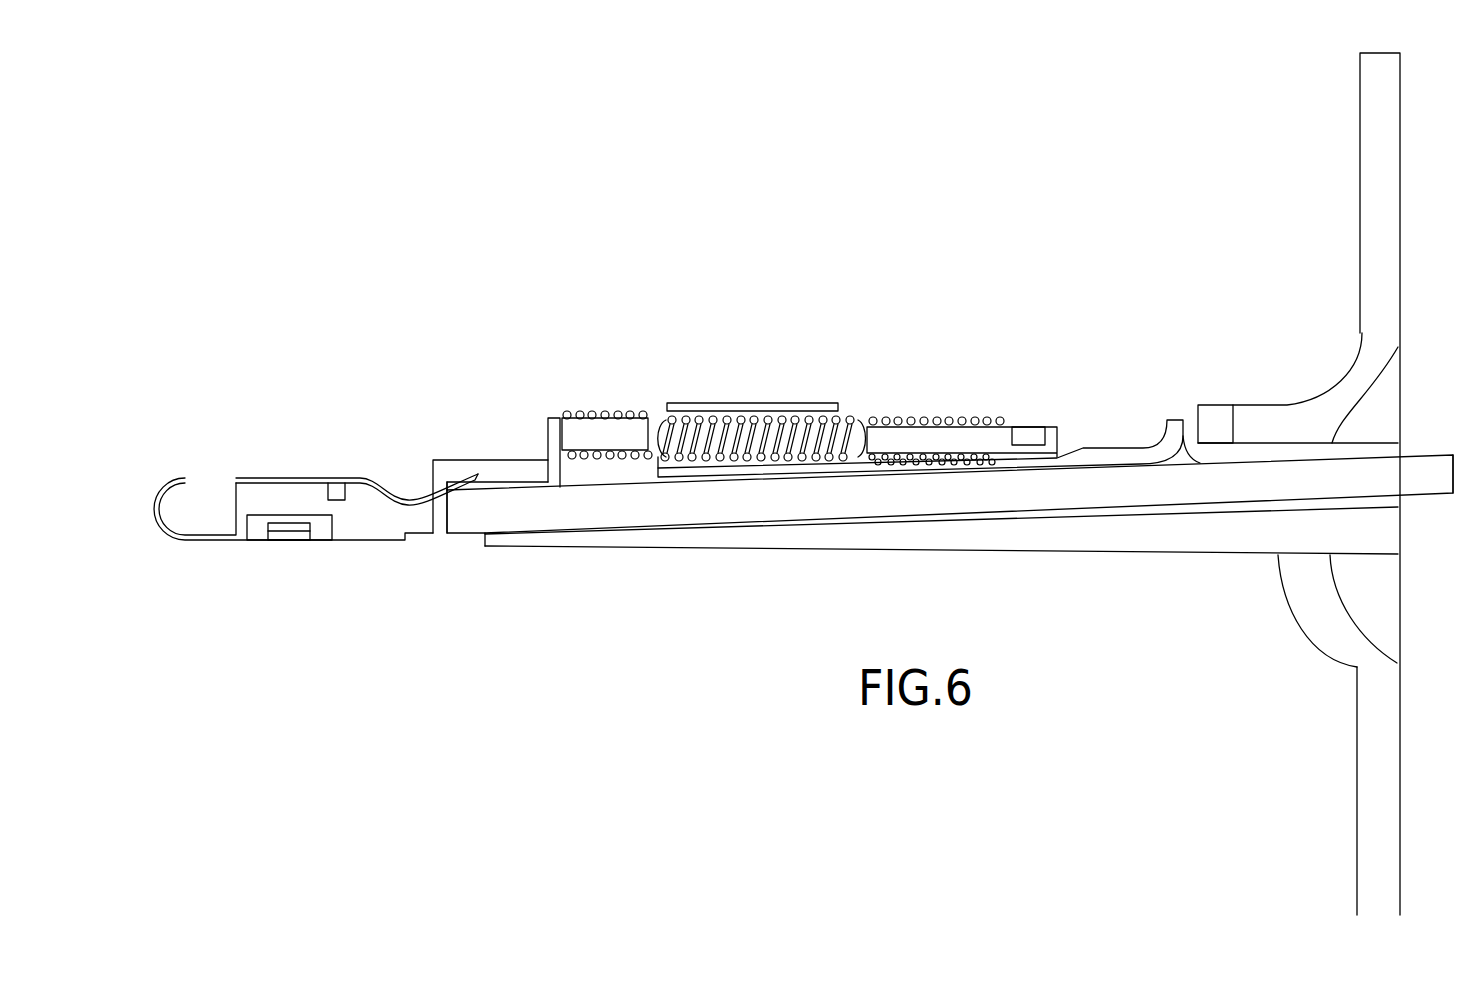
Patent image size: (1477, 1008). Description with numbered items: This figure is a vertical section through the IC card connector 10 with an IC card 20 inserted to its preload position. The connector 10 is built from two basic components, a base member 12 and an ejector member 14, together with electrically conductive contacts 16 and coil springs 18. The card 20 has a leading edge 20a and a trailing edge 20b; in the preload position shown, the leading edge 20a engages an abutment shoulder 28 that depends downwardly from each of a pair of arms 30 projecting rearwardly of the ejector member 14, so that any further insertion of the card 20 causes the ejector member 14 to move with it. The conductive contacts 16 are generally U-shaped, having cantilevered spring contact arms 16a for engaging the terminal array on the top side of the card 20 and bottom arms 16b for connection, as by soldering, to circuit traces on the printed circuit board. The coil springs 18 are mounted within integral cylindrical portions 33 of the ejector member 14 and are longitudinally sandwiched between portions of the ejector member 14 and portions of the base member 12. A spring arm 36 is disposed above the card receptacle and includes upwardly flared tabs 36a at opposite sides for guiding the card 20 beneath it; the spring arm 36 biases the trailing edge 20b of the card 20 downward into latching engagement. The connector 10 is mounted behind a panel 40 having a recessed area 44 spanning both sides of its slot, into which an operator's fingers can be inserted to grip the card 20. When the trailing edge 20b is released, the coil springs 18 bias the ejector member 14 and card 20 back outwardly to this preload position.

The IC card connector 10 is at (986, 394).
The base member 12 is at (548, 408).
The ejector member 14 is at (1060, 416).
The electrically conductive contacts 16 is at (186, 470).
The cantilevered spring contact arms 16a is at (307, 474).
The bottom arms 16b is at (285, 535).
The coil springs 18 is at (870, 418).
The IC card 20 is at (870, 497).
The leading edge 20a is at (445, 535).
The trailing edge 20b is at (1455, 483).
The abutment shoulder 28 is at (446, 520).
The arms 30 is at (492, 462).
The integral cylindrical portions 33 is at (766, 404).
The spring arm 36 is at (1130, 448).
The upwardly flared tabs 36a is at (1178, 410).
The panel 40 is at (1378, 137).
The recessed area 44 is at (1370, 392).